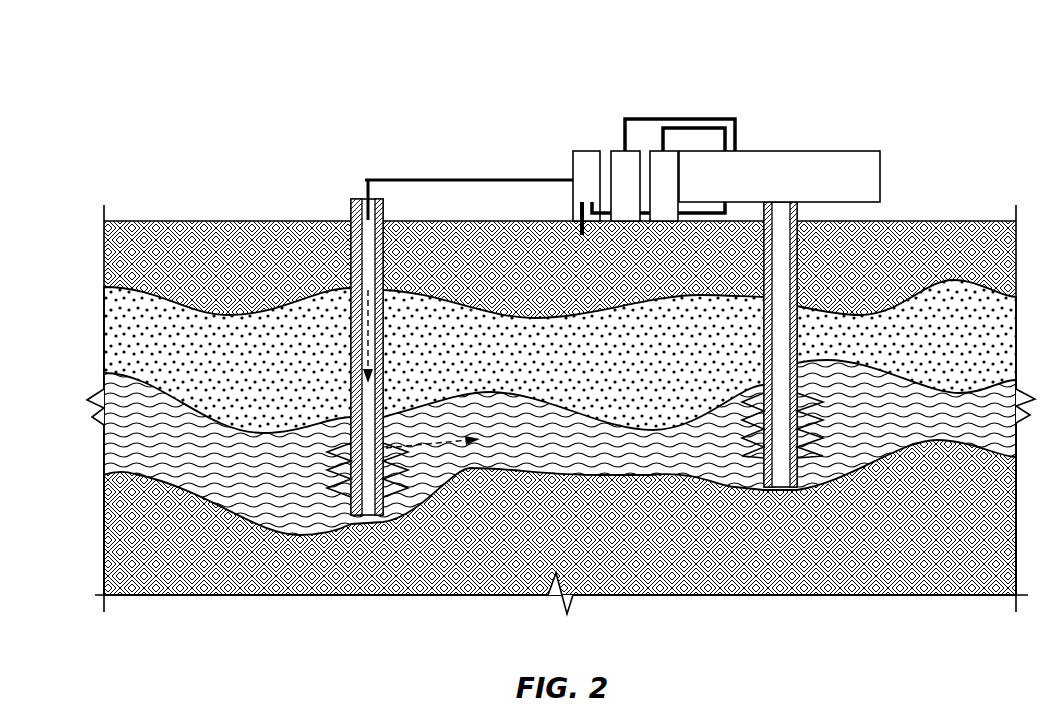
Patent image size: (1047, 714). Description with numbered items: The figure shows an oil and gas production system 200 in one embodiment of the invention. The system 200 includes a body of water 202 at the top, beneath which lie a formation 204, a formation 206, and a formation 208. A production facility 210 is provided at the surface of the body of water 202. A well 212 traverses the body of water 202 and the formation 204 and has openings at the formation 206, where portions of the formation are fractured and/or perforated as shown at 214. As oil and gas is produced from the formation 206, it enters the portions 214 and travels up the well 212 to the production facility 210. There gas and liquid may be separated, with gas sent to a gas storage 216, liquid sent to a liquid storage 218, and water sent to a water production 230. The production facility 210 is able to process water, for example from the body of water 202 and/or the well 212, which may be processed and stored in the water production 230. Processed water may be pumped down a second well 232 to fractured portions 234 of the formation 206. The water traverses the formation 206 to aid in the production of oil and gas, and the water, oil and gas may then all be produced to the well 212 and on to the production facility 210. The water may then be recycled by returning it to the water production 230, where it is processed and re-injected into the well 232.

The system 200 is at (132, 106).
The body of water 202 is at (538, 279).
The formation 204 is at (538, 370).
The formation 206 is at (538, 450).
The formation 208 is at (538, 535).
The production facility 210 is at (758, 186).
The well 212 is at (785, 263).
The fractured and/or perforated portions 214 is at (805, 450).
The gas storage 216 is at (669, 158).
The liquid storage 218 is at (628, 158).
The water production 230 is at (585, 158).
The well 232 is at (360, 212).
The fractured portions 234 is at (348, 490).